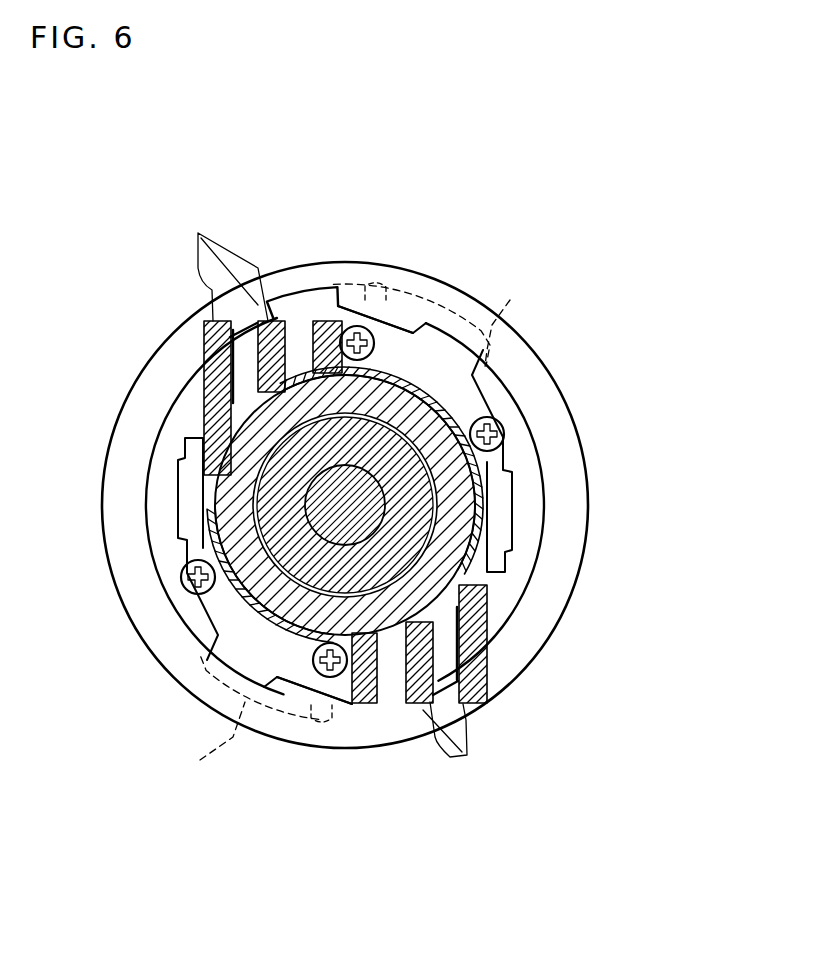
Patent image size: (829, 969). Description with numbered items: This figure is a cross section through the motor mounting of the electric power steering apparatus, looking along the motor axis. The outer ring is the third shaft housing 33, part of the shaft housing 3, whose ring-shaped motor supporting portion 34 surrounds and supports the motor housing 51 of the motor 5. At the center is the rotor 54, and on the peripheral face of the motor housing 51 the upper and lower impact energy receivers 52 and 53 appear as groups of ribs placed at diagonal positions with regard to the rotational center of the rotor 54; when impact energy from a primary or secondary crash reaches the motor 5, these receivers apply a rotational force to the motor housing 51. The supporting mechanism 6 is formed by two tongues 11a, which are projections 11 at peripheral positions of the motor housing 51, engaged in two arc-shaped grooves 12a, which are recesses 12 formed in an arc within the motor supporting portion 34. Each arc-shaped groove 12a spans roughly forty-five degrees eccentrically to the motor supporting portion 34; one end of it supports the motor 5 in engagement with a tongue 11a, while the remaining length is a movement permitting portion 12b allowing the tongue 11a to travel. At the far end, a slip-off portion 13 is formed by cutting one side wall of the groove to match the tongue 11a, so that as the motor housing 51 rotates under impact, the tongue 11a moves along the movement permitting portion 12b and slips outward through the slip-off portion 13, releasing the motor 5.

The shaft housing 3 is at (407, 505).
The third shaft housing 33 is at (556, 379).
The motor supporting portion 34 is at (345, 286).
The motor 5 is at (452, 407).
The motor housing 51 is at (487, 460).
The upper impact energy receiver 52 is at (232, 339).
The lower impact energy receiver 53 is at (456, 689).
The rotor 54 is at (378, 517).
The supporting mechanism 6 is at (445, 305).
The projection 11 is at (387, 532).
The tongue 11a is at (510, 300).
The recess 12 is at (344, 480).
The arc-shaped groove 12a is at (460, 320).
The movement permitting portion 12b is at (390, 288).
The slip-off portion 13 is at (314, 320).